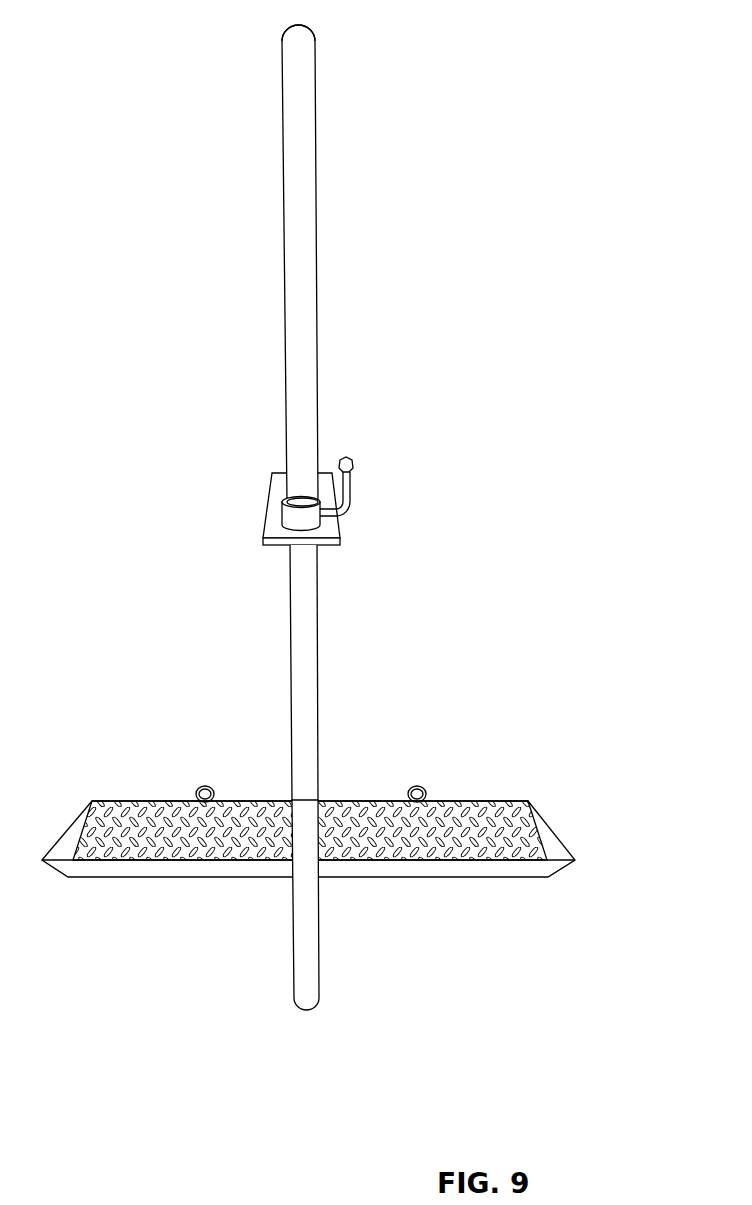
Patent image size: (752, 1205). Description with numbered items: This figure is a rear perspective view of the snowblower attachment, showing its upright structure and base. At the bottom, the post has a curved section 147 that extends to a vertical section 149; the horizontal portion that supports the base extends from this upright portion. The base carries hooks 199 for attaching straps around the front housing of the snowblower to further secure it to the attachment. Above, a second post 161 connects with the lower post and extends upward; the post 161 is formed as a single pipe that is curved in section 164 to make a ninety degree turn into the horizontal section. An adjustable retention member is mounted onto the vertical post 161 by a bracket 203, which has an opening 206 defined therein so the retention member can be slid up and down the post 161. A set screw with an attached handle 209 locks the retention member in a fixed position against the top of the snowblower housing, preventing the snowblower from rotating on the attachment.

The curved section 147 is at (308, 982).
The vertical section 149 is at (308, 693).
The post 161 is at (302, 170).
The curved section 164 is at (298, 36).
The hooks 199 is at (200, 790).
The bracket 203 is at (275, 527).
The opening 206 is at (300, 503).
The handle 209 is at (352, 470).